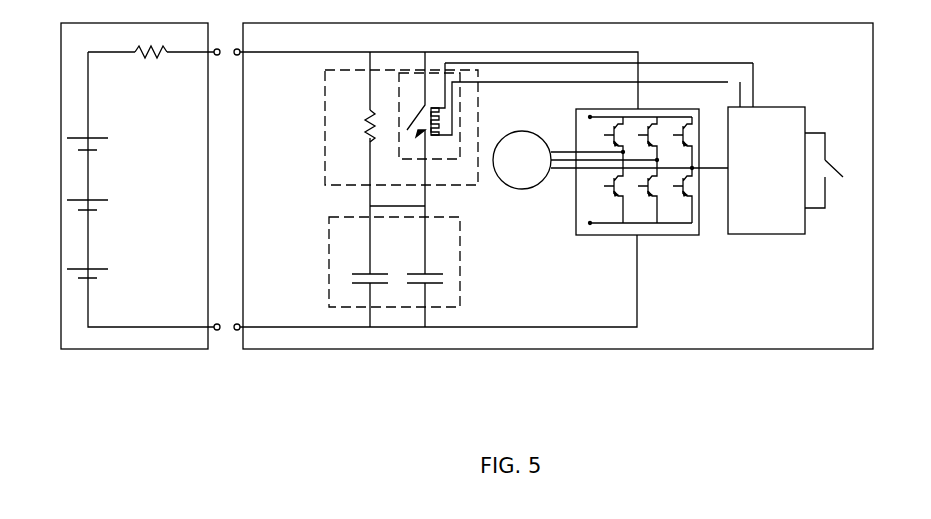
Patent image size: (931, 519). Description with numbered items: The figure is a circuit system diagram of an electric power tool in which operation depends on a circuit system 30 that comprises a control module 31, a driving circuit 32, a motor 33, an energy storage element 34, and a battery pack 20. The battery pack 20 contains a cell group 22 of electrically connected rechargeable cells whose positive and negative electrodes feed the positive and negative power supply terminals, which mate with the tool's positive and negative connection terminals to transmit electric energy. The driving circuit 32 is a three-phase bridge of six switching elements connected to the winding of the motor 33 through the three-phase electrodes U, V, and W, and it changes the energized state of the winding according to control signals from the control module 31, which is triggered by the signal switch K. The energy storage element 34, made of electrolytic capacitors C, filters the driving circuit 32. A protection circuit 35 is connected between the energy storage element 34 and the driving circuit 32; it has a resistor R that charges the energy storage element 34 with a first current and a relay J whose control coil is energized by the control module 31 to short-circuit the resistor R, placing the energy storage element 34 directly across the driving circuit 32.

The battery pack 20 is at (171, 22).
The cell group 22 is at (71, 138).
The circuit system 30 is at (463, 22).
The control module 31 is at (757, 235).
The driving circuit 32 is at (622, 238).
The motor 33 is at (521, 190).
The energy storage element 34 is at (329, 240).
The protection circuit 35 is at (325, 130).